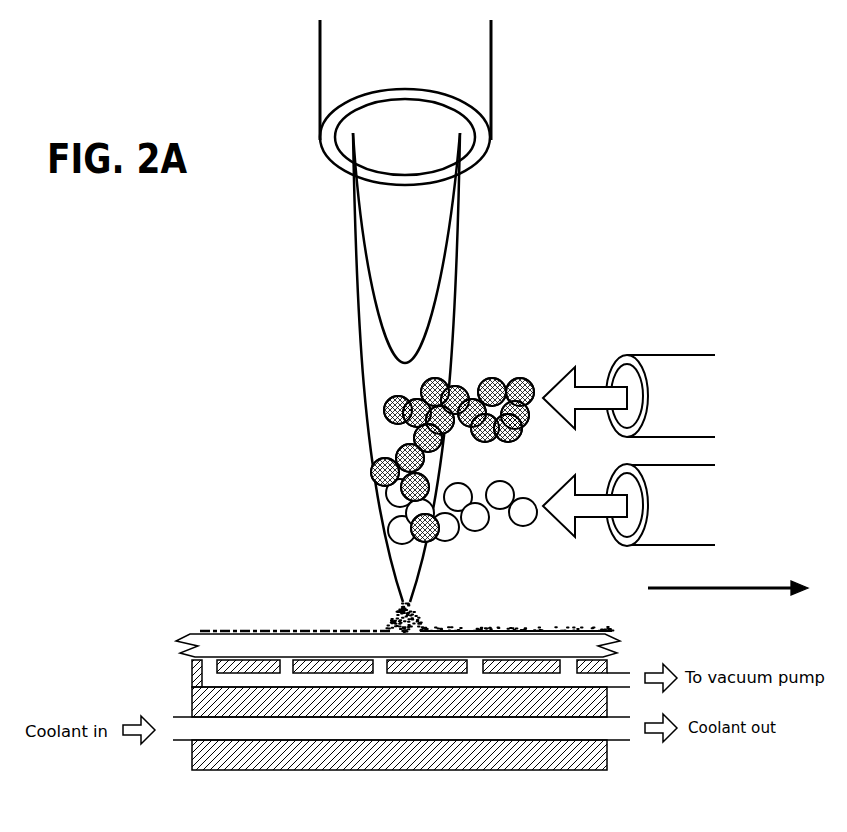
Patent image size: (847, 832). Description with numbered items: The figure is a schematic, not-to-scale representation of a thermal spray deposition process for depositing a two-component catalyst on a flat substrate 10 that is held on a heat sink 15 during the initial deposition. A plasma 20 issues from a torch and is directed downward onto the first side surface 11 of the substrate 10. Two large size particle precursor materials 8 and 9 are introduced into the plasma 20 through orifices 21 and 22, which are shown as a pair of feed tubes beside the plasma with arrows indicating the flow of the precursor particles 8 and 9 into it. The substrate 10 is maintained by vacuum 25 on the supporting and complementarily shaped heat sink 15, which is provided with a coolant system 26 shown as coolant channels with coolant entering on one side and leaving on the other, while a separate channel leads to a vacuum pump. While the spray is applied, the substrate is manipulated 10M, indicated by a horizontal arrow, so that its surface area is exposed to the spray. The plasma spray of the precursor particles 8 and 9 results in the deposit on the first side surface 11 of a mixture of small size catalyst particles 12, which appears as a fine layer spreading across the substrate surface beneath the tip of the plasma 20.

The plasma 20 is at (368, 325).
The large size particle precursor material 9 is at (393, 402).
The large size particle precursor material 8 is at (402, 528).
The orifice 22 is at (683, 392).
The orifice 21 is at (683, 503).
The first side surface 11 is at (230, 632).
The substrate 10 is at (338, 647).
The small size catalyst particles 12 is at (528, 627).
The vacuum 25 is at (200, 673).
The coolant system 26 is at (297, 730).
The heat sink 15 is at (210, 770).
The substrate manipulation 10M is at (728, 604).